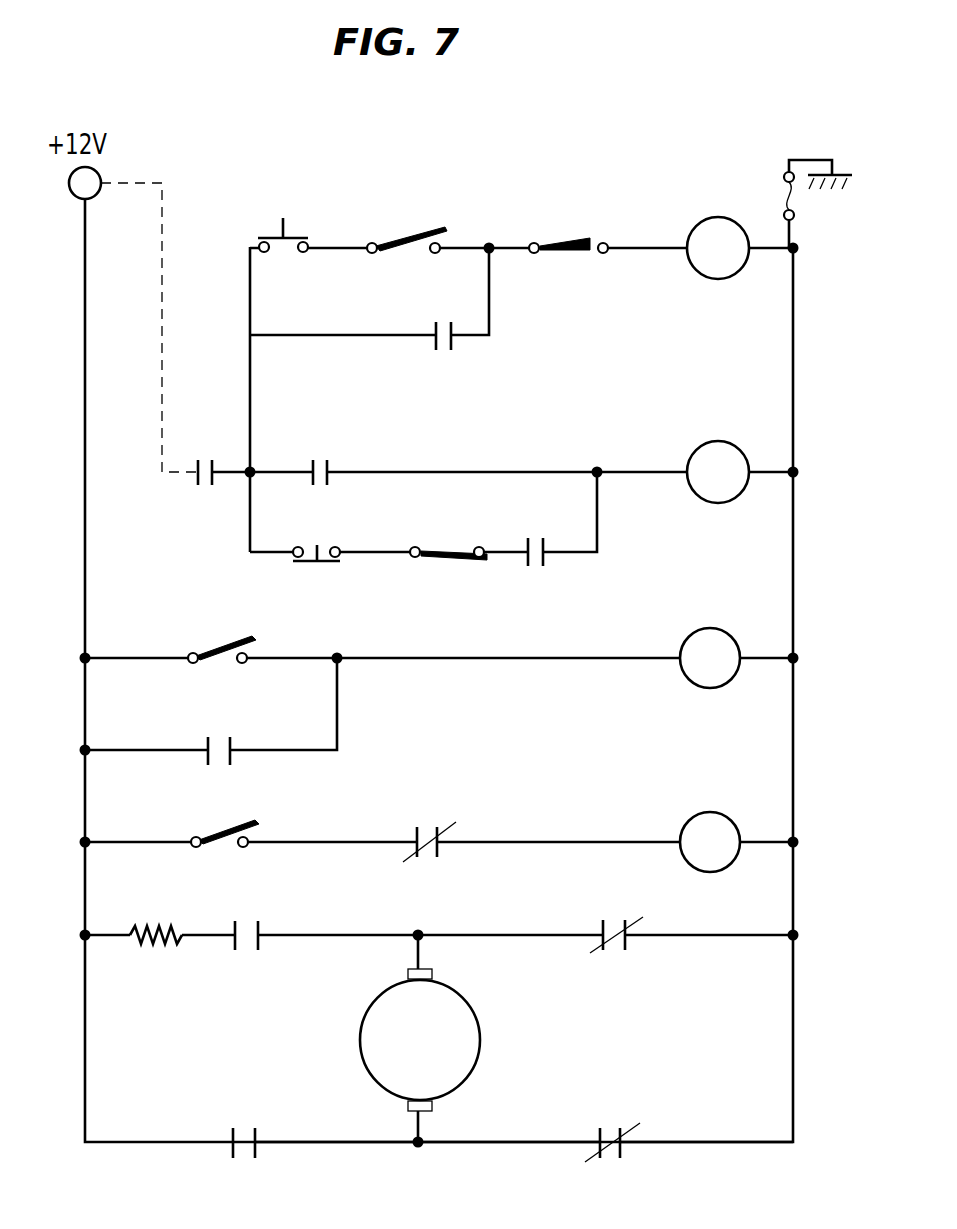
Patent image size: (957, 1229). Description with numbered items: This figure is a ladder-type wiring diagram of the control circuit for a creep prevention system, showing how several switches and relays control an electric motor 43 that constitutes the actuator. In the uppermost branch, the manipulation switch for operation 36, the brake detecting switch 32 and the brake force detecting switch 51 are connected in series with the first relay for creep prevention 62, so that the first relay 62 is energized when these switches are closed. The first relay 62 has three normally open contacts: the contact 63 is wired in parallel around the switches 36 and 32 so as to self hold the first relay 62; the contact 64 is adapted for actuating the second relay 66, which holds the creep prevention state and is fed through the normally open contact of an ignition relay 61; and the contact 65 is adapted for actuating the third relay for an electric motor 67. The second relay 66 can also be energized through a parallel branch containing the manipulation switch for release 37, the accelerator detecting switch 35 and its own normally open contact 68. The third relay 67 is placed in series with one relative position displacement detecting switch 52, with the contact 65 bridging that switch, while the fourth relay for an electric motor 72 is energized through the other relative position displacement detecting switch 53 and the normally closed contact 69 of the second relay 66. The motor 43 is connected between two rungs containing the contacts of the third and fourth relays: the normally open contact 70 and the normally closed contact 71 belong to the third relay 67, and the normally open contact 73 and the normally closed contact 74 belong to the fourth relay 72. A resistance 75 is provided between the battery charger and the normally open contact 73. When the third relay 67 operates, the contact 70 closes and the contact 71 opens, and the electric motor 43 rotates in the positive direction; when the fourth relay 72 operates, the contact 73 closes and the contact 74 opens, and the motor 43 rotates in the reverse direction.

The brake detecting switch 32 is at (415, 238).
The accelerator detecting switch 35 is at (452, 551).
The manipulation switch for operation 36 is at (283, 218).
The manipulation switch for release 37 is at (317, 545).
The electric motor 43 is at (477, 1022).
The brake force detecting switch 51 is at (582, 238).
The one relative position displacement detecting switch 52 is at (222, 645).
The other relative position displacement detecting switch 53 is at (216, 828).
The normally open contact of an ignition relay 61 is at (195, 466).
The first relay for creep prevention 62 is at (741, 270).
The normally open contact of the first relay 63 is at (453, 347).
The normally open contact of the first relay 64 is at (329, 466).
The normally open contact of the first relay 65 is at (231, 758).
The second relay for holding a creep prevention state 66 is at (741, 494).
The third relay for an electric motor 67 is at (733, 678).
The normally open contact of the second relay 68 is at (545, 560).
The normally closed contact of the second relay 69 is at (446, 832).
The normally open contact of the third relay 70 is at (257, 1140).
The normally closed contact of the third relay 71 is at (628, 1135).
The fourth relay for an electric motor 72 is at (731, 866).
The normally open contact of the fourth relay 73 is at (259, 930).
The normally closed contact of the fourth relay 74 is at (627, 945).
The resistance 75 is at (165, 938).